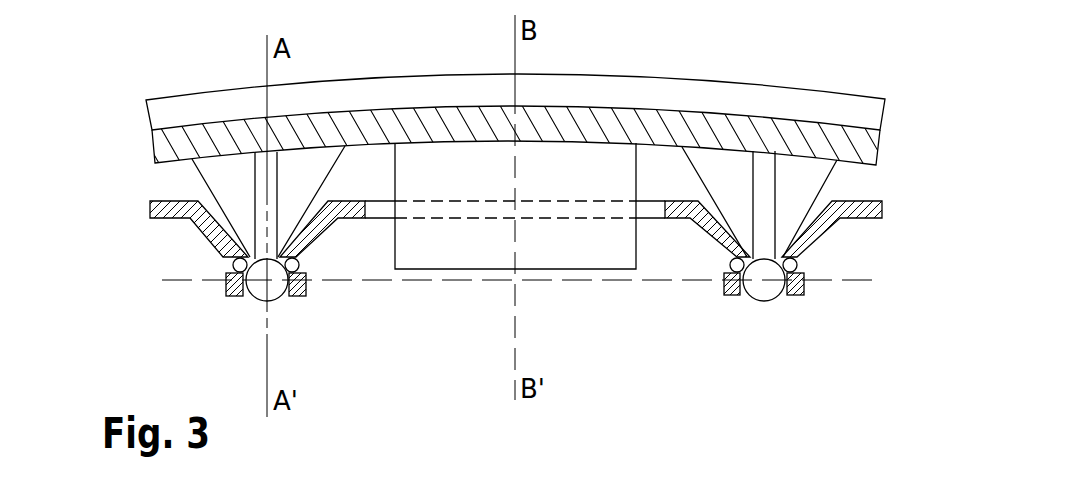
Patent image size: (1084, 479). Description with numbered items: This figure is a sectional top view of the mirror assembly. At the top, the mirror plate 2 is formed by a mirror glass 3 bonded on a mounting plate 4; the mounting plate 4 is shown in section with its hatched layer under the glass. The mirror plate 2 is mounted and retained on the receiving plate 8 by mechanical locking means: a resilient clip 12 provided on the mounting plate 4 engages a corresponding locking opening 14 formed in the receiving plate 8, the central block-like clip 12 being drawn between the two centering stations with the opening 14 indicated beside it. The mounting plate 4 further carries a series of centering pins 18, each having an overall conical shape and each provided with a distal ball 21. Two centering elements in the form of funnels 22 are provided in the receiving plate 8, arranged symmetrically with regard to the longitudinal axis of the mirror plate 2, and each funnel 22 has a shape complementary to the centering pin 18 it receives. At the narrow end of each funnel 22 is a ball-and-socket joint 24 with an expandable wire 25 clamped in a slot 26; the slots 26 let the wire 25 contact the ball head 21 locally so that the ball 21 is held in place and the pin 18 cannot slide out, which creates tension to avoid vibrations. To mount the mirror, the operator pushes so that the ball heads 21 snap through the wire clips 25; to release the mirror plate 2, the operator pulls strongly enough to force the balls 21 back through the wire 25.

The mirror plate 2 is at (88, 73).
The mirror glass 3 is at (148, 117).
The mounting plate 4 is at (150, 152).
The receiving plate 8 is at (150, 218).
The resilient clip 12 is at (557, 248).
The locking opening 14 is at (652, 208).
The centering pin 18 is at (201, 175).
The distal ball 21 is at (273, 290).
The funnel 22 is at (333, 216).
The ball-and-socket joint 24 is at (250, 297).
The expandable wire 25 is at (233, 265).
The slot 26 is at (307, 264).